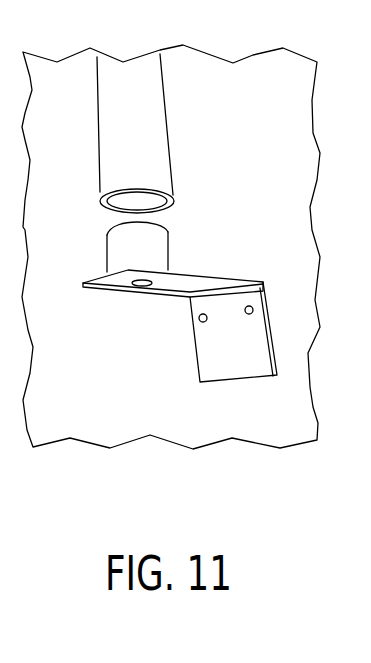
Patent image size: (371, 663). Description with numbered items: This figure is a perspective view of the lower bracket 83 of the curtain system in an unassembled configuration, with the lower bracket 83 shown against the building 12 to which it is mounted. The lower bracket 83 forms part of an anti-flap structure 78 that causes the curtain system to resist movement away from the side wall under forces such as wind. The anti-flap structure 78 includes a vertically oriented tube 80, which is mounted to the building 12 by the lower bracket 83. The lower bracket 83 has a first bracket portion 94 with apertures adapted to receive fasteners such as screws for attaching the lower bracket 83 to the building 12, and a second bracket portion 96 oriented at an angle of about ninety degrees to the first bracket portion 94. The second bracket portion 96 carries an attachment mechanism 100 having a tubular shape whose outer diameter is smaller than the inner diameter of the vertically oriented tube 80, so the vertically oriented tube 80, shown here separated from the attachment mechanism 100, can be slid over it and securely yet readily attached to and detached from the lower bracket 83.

The building 12 is at (80, 415).
The anti-flap structure 78 is at (230, 105).
The vertically oriented tube 80 is at (127, 90).
The lower bracket 83 is at (230, 367).
The first bracket portion 94 is at (271, 357).
The second bracket portion 96 is at (108, 293).
The attachment mechanism 100 is at (117, 258).